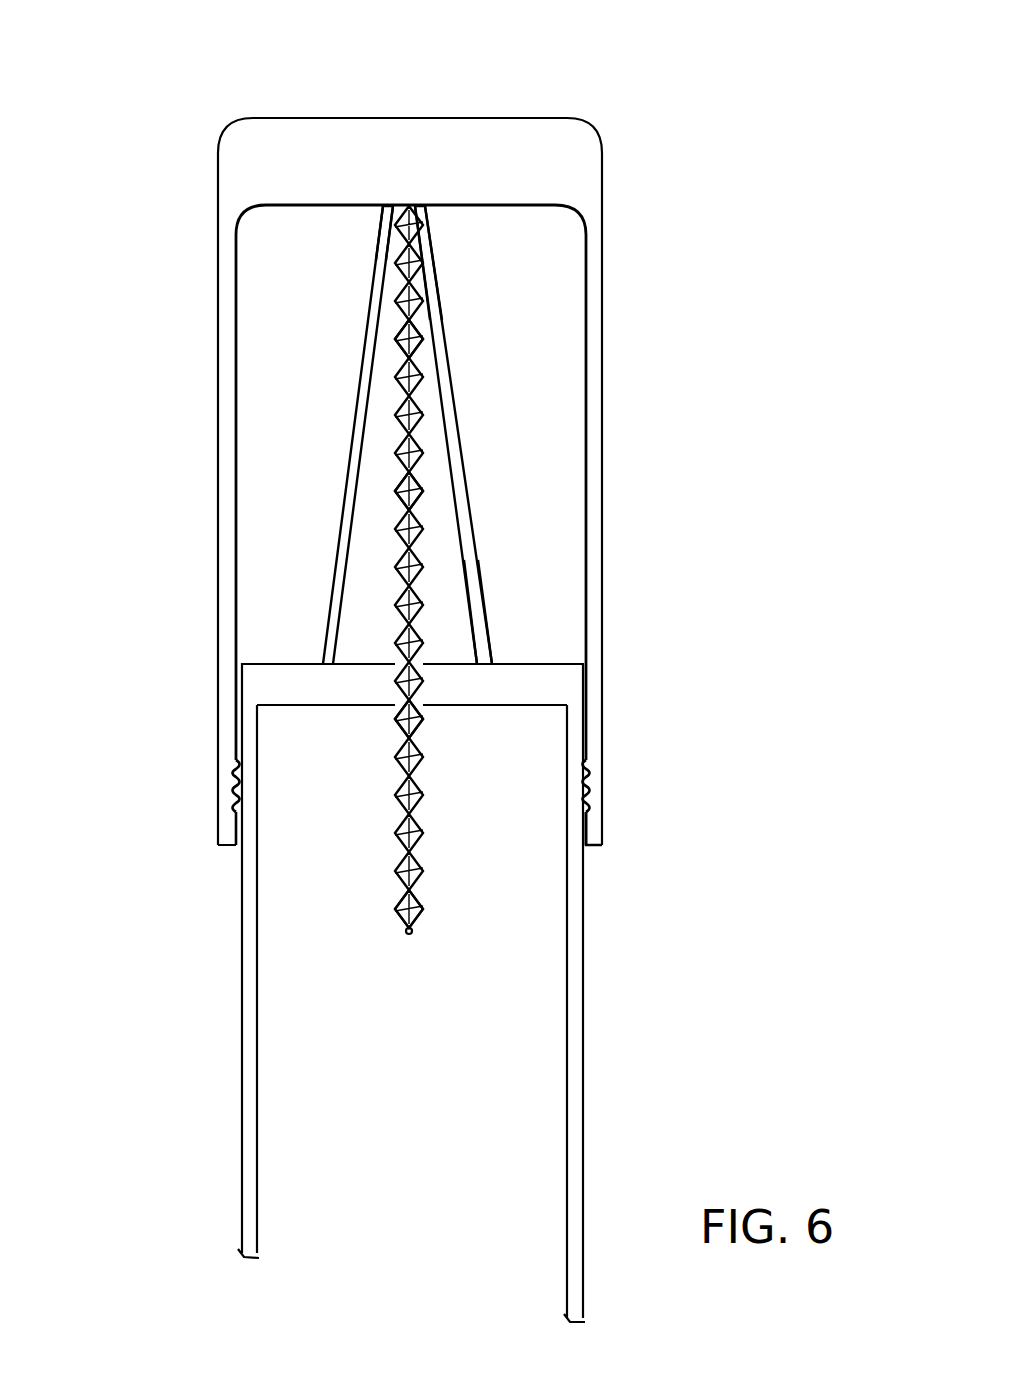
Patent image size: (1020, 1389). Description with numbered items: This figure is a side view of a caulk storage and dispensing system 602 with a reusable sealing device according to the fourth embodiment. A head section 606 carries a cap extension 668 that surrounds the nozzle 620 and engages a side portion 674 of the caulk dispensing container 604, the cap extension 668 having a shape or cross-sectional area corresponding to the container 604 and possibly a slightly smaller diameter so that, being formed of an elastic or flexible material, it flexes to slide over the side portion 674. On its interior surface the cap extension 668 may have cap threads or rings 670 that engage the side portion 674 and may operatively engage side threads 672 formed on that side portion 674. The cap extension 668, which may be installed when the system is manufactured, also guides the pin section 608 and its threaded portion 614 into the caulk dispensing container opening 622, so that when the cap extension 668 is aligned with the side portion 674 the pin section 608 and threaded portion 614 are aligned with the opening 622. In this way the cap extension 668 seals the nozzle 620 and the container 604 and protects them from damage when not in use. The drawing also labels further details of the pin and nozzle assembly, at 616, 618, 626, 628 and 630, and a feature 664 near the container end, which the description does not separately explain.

The lighter assembly 602 is at (176, 312).
The caulk dispensing container 604 is at (586, 1040).
The head section 606 is at (601, 180).
The pin section 608 is at (413, 317).
The threaded portion 614 is at (400, 353).
The middle portion of coil 616 is at (423, 497).
The coil tip 618 is at (412, 934).
The nozzle 620 is at (452, 402).
The caulk dispensing container opening 622 is at (400, 712).
The leg junction 626 is at (433, 243).
The leg lower end 628 is at (484, 632).
The leg upper portion 630 is at (427, 283).
The plate aperture 664 is at (395, 660).
The cap extension 668 is at (593, 553).
The cap threads or rings 670 is at (597, 790).
The side threads 672 is at (577, 813).
The side portion 674 is at (252, 686).